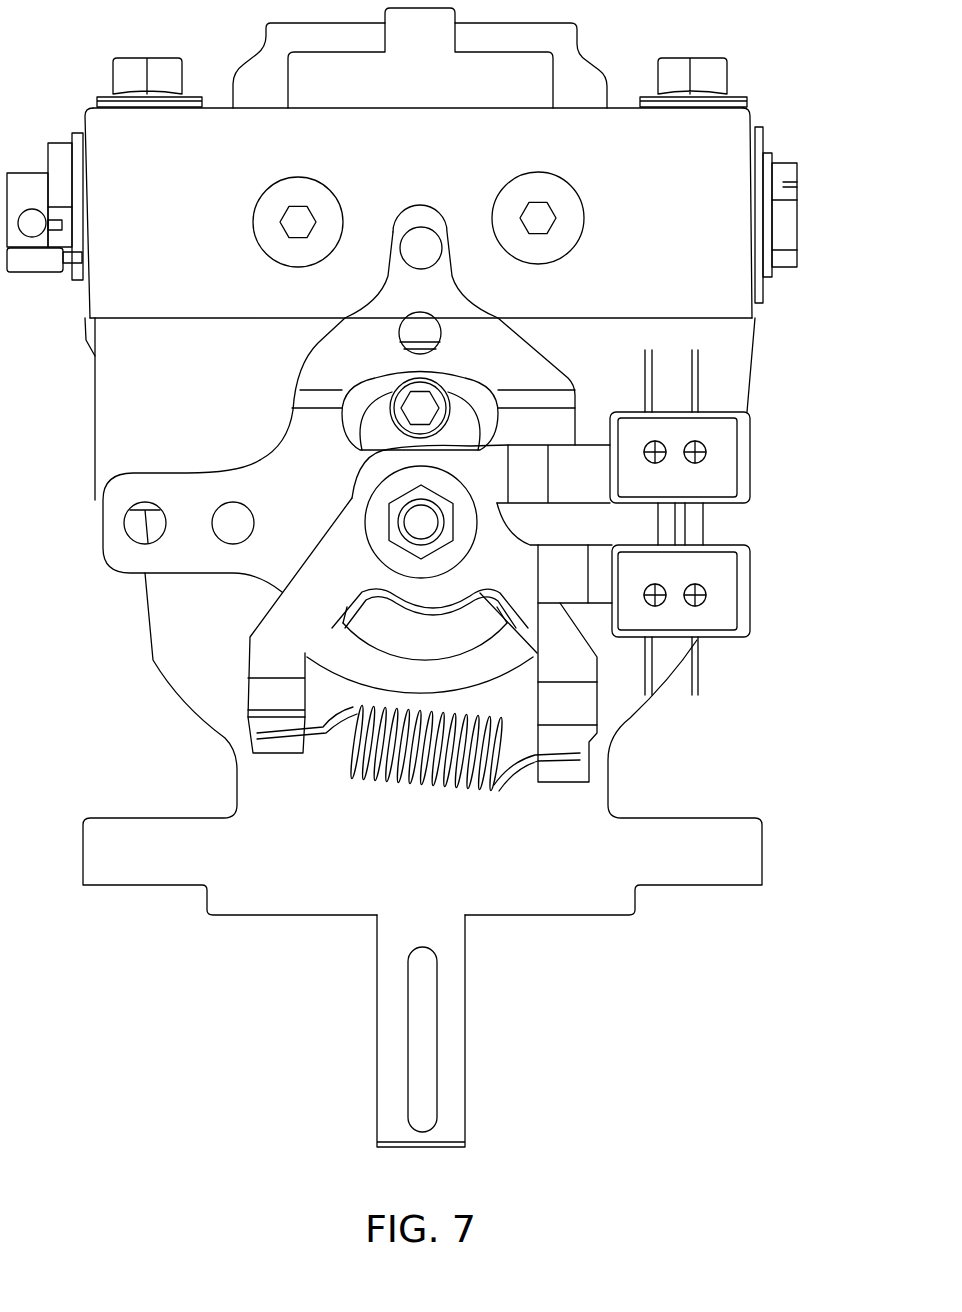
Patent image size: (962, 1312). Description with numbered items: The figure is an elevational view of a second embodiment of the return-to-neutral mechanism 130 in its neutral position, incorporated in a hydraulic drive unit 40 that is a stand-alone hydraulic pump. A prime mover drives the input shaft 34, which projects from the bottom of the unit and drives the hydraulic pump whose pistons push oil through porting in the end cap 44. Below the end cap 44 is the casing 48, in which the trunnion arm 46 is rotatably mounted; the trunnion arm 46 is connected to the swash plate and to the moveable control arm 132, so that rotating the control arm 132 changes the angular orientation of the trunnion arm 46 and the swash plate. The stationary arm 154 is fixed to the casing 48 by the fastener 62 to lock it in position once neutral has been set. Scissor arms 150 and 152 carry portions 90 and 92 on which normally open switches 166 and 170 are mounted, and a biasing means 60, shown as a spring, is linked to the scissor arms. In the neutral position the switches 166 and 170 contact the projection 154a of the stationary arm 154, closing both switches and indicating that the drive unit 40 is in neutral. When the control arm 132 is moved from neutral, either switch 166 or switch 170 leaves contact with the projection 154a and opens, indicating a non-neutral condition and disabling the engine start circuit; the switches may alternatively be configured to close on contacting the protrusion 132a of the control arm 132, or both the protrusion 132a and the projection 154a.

The hydraulic drive unit 40 is at (773, 64).
The end cap 44 is at (177, 224).
The casing 48 is at (192, 404).
The fastener 62 is at (396, 391).
The control arm 132 is at (504, 361).
The trunnion arm 46 is at (421, 522).
The scissor arm 152 is at (604, 487).
The switch 170 is at (713, 491).
The portion of scissor arm 92 is at (747, 458).
The protrusion 132a is at (660, 522).
The projection 154a is at (700, 522).
The switch 166 is at (713, 577).
The portion of scissor arm 90 is at (747, 590).
The scissor arm 150 is at (589, 587).
The stationary arm 154 is at (446, 691).
The return-to-neutral mechanism 130 is at (200, 625).
The biasing means 60 is at (420, 788).
The input shaft 34 is at (467, 1030).